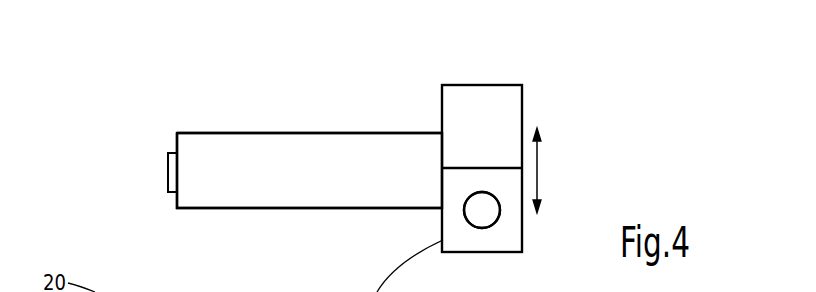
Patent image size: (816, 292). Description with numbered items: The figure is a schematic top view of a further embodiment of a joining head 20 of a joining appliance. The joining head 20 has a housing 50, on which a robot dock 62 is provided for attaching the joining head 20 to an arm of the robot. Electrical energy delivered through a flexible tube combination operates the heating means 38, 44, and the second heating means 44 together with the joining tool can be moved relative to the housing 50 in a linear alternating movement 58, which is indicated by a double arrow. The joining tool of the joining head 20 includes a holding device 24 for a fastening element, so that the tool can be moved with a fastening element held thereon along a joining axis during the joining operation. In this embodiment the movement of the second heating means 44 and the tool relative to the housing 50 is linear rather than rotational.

The joining head 20 is at (294, 104).
The housing 50 is at (365, 133).
The robot dock 62 is at (170, 172).
The second heating means 44 is at (494, 119).
The linear alternating movement 58 is at (537, 170).
The heating means 38 is at (493, 228).
The holding device 24 is at (463, 218).